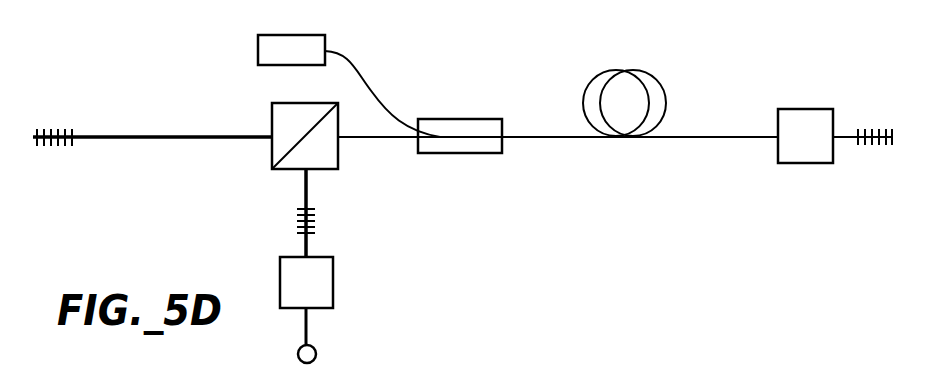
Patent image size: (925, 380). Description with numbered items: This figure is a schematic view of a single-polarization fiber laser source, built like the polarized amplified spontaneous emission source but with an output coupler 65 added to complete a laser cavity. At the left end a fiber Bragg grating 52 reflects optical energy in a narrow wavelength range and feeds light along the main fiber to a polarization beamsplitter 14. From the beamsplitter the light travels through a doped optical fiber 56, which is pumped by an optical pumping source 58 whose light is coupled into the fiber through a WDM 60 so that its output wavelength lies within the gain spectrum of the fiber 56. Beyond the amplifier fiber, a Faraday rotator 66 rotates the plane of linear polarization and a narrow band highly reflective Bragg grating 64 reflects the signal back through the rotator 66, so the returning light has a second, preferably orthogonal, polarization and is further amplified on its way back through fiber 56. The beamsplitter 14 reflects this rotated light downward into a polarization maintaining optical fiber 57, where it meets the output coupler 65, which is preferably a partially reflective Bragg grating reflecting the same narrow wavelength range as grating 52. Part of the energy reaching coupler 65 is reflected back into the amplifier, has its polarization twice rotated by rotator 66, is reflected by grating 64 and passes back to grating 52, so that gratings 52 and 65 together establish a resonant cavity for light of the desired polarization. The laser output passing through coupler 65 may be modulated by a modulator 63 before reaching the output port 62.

The fiber Bragg grating 52 is at (48, 130).
The polarization beamsplitter 14 is at (288, 103).
The optical pumping source 58 is at (258, 52).
The WDM 60 is at (492, 119).
The doped optical fiber 56 is at (633, 70).
The Faraday rotator 66 is at (805, 109).
The narrow band highly reflective Bragg grating 64 is at (880, 128).
The polarization maintaining optical fiber 57 is at (305, 195).
The output coupler 65 is at (318, 222).
The modulator 63 is at (333, 285).
The output port 62 is at (316, 350).